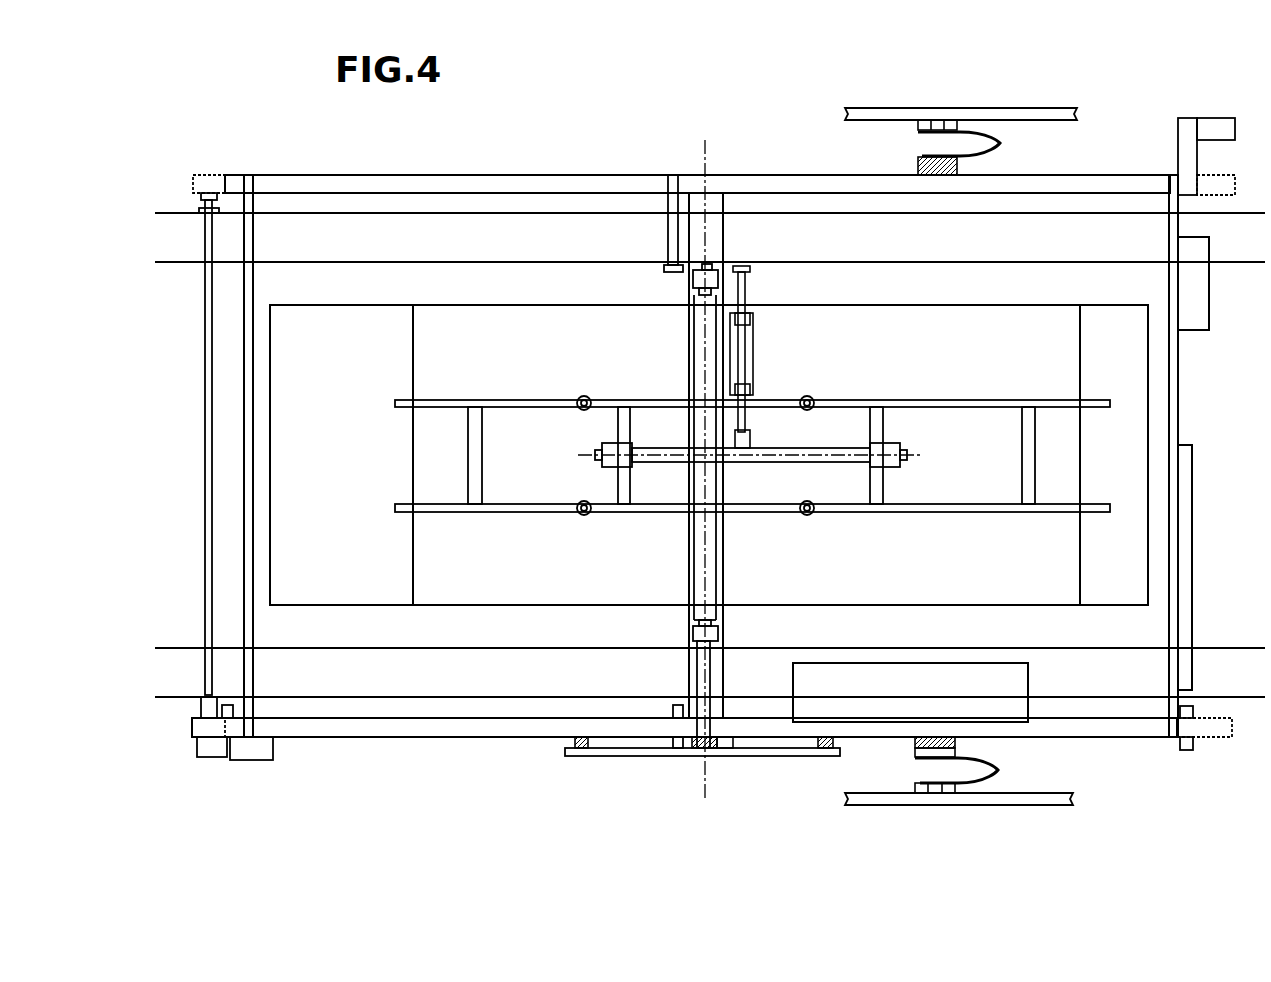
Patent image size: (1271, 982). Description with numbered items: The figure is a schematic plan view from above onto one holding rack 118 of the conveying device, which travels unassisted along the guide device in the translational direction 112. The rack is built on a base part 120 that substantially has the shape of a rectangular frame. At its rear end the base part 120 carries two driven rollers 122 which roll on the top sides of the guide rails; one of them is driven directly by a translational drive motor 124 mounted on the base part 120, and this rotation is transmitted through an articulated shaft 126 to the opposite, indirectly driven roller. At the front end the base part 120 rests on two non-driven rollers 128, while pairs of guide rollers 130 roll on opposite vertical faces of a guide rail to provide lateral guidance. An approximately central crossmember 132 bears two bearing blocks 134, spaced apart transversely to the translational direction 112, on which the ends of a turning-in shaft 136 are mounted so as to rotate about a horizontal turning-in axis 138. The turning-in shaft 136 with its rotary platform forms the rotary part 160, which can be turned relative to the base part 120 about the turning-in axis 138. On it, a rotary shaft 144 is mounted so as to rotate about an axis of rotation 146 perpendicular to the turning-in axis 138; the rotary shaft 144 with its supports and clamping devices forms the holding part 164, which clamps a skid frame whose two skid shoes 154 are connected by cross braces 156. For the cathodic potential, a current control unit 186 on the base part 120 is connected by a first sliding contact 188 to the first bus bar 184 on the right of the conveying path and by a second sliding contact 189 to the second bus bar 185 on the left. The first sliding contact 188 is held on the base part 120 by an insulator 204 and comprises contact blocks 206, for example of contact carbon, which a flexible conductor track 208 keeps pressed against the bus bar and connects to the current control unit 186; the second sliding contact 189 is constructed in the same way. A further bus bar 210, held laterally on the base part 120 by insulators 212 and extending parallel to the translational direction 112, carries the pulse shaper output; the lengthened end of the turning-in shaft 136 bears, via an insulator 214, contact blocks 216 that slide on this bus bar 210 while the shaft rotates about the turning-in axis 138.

The translational direction 112 is at (388, 455).
The holding rack 118 is at (1112, 172).
The base part 120 is at (488, 170).
The driven rollers 122 is at (222, 185).
The translational drive motor 124 is at (258, 760).
The articulated shaft 126 is at (206, 398).
The non-driven rollers 128 is at (1215, 185).
The guide rollers 130 is at (228, 740).
The crossmember 132 is at (696, 660).
The bearing blocks 134 is at (712, 276).
The turning-in shaft 136 is at (700, 558).
The turning-in axis 138 is at (700, 183).
The rotary shaft 144 is at (835, 455).
The axis of rotation 146 is at (915, 468).
The skid shoes 154 is at (950, 400).
The cross braces 156 is at (480, 440).
The rotary part 160 is at (688, 320).
The holding part 164 is at (678, 440).
The first bus bar 184 is at (990, 806).
The second bus bar 185 is at (1010, 118).
The current control unit 186 is at (910, 692).
The first sliding contact 188 is at (912, 770).
The second sliding contact 189 is at (915, 140).
The insulator 204 is at (935, 178).
The contact blocks 206 is at (944, 125).
The flexible conductor track 208 is at (1000, 143).
The bus bar 210 is at (600, 756).
The insulators 212 is at (580, 737).
The insulator 214 is at (732, 737).
The contact blocks 216 is at (715, 752).